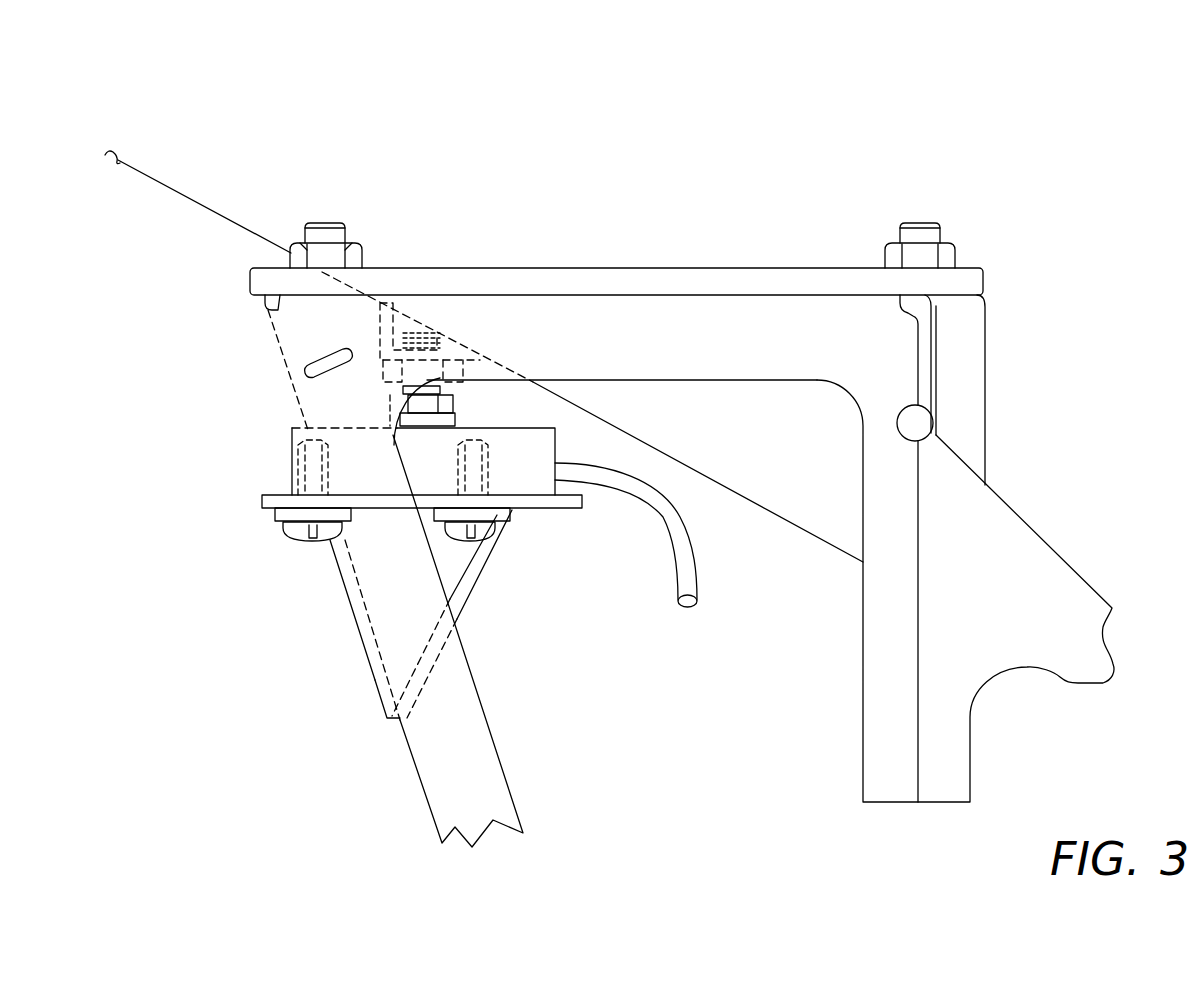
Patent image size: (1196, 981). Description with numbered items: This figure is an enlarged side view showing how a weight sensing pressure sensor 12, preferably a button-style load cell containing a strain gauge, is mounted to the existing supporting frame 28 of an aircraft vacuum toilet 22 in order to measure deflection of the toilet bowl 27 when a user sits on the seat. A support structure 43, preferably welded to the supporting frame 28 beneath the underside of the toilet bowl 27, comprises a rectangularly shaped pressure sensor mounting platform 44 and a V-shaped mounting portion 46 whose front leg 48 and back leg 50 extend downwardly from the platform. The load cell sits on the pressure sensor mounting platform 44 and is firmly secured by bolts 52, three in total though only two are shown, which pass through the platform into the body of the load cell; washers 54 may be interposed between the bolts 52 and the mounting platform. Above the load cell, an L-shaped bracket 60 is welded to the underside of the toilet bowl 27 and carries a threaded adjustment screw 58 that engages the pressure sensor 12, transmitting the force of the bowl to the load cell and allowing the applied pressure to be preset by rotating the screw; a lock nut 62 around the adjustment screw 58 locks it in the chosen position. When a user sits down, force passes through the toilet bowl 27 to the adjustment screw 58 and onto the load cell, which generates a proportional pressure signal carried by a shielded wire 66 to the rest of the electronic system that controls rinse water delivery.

The pressure sensor 12 is at (290, 453).
The toilet 22 is at (97, 152).
The toilet bowl 27 is at (183, 197).
The supporting frame 28 is at (423, 790).
The support structure 43 is at (394, 445).
The pressure sensor mounting platform 44 is at (262, 500).
The V-shaped mounting portion 46 is at (368, 675).
The front leg 48 is at (362, 620).
The back leg 50 is at (473, 578).
The bolts 52 is at (301, 538).
The washers 54 is at (274, 512).
The adjustment screw 58 is at (457, 404).
The L-shaped bracket 60 is at (388, 320).
The lock nut 62 is at (425, 376).
The shielded wire 66 is at (688, 573).